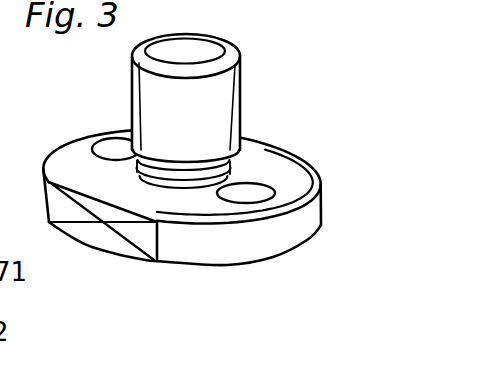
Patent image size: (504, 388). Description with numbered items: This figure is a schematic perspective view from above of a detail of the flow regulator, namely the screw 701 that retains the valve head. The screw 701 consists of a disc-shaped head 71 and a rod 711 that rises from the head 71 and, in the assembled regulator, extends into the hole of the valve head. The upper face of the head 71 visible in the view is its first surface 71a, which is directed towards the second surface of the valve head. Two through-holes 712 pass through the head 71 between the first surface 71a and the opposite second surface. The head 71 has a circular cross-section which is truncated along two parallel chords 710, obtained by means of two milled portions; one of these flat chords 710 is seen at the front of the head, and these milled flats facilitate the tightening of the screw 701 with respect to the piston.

The screw 701 is at (209, 182).
The head 71 is at (300, 218).
The first surface 71a is at (242, 158).
The chord 710 is at (108, 238).
The rod 711 is at (213, 110).
The through-hole 712 is at (108, 148).